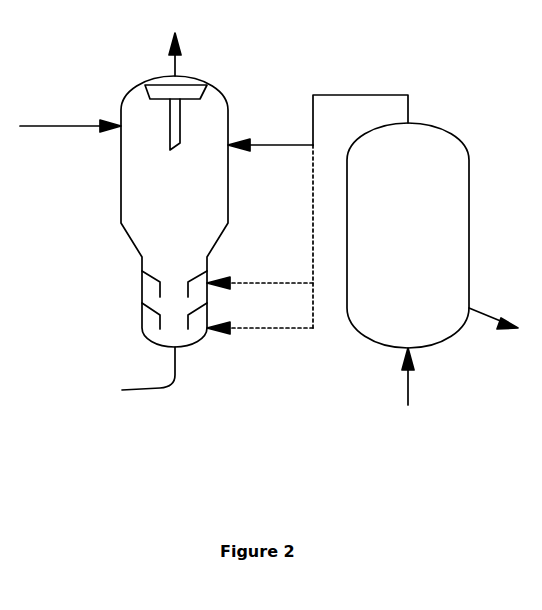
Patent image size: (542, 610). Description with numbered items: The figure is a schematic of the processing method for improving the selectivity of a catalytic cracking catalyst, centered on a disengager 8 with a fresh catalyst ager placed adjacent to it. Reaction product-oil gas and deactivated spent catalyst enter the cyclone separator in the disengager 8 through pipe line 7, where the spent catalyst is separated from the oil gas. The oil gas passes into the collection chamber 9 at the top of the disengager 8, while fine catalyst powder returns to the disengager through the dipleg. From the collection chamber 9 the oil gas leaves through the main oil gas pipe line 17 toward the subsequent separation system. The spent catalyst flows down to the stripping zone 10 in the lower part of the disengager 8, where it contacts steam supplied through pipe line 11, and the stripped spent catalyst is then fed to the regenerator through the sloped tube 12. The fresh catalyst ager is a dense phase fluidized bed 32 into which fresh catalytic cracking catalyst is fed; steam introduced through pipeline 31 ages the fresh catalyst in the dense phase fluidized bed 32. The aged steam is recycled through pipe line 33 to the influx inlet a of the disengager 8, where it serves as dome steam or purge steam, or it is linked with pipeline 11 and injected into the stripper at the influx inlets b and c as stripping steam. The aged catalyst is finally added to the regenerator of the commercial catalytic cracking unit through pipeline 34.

The pipe line 7 is at (70, 119).
The disengager 8 is at (174, 211).
The collection chamber 9 is at (171, 128).
The stripping zone 10 is at (150, 293).
The pipe line 11 is at (293, 236).
The sloped tube 12 is at (148, 368).
The main oil gas pipe line 17 is at (187, 54).
The pipeline 31 is at (423, 376).
The dense phase fluidized bed 32 is at (408, 235).
The pipe line 33 is at (360, 106).
The pipeline 34 is at (493, 310).
The influx inlet a is at (270, 132).
The influx inlet b is at (260, 273).
The influx inlet c is at (260, 318).